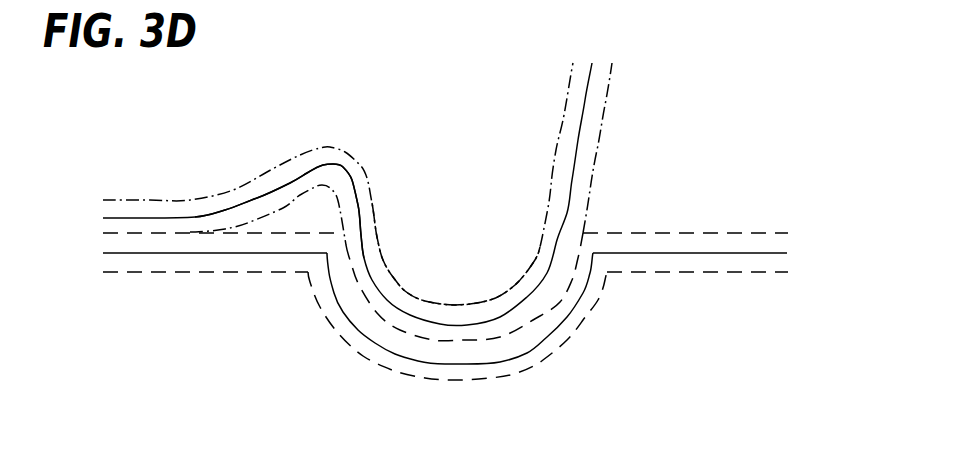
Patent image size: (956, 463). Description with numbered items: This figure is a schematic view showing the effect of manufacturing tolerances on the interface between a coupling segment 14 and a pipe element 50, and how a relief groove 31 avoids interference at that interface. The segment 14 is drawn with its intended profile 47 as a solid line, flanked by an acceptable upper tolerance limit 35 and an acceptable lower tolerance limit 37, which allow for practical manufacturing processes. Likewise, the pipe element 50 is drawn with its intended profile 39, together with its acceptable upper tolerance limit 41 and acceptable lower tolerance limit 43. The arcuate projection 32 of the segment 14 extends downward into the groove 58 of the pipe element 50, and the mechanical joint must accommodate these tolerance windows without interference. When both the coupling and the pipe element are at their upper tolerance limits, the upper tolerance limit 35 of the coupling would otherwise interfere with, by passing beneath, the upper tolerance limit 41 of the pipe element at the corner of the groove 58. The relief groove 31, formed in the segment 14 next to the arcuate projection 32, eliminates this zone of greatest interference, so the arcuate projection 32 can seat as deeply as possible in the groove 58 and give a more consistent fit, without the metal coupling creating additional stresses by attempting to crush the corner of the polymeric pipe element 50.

The segment 14 is at (202, 146).
The relief groove 31 is at (327, 210).
The arcuate projection 32 is at (454, 290).
The upper tolerance limit 35 is at (601, 132).
The lower tolerance limit 37 is at (570, 92).
The intended profile 39 is at (768, 253).
The upper tolerance limit 41 is at (737, 234).
The lower tolerance limit 43 is at (745, 273).
The intended profile 47 is at (595, 78).
The pipe element 50 is at (702, 315).
The groove 58 is at (552, 332).